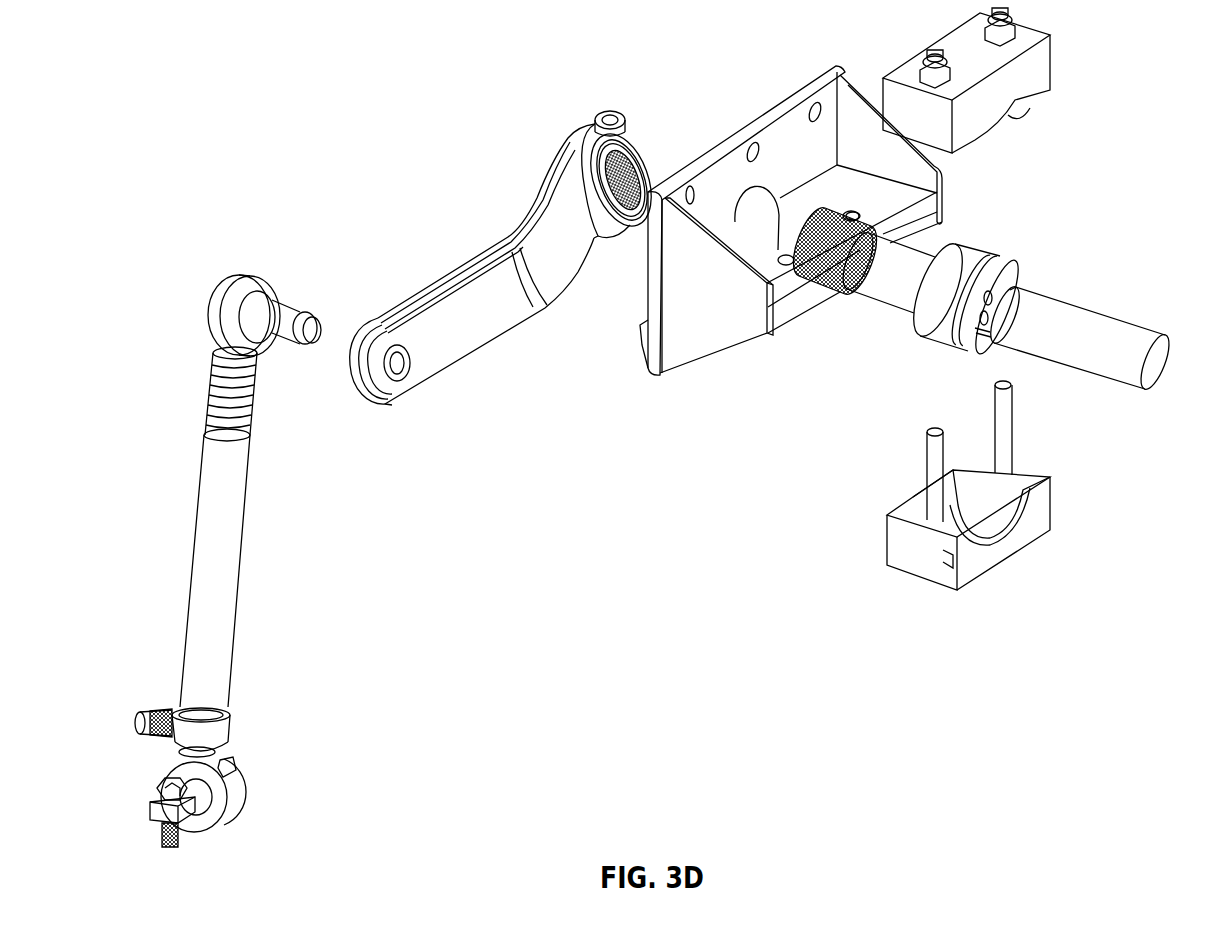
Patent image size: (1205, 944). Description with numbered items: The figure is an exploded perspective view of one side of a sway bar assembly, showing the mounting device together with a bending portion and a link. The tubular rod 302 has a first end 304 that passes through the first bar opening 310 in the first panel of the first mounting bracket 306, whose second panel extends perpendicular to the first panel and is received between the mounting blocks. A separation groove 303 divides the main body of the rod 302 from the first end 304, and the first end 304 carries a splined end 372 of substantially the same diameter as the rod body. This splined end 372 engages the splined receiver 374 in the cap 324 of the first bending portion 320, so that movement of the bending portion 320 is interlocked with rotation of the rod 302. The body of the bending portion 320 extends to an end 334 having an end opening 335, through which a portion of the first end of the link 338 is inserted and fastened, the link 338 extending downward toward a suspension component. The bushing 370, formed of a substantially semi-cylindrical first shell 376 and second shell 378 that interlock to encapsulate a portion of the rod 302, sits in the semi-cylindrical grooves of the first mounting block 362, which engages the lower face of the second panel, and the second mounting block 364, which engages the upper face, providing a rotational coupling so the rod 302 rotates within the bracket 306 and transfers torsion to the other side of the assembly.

The tubular rod 302 is at (1097, 332).
The separation groove 303 is at (868, 300).
The first end 304 is at (795, 332).
The first mounting bracket 306 is at (648, 338).
The first bar opening 310 is at (750, 197).
The first bending portion 320 is at (560, 215).
The cap 324 is at (575, 140).
The end 334 is at (395, 420).
The end opening 335 is at (390, 330).
The link 338 is at (258, 285).
The first mounting block 362 is at (975, 555).
The second mounting block 364 is at (1050, 75).
The bushing 370 is at (1040, 262).
The splined end 372 is at (850, 212).
The splined receiver 374 is at (643, 177).
The first shell 376 is at (948, 340).
The second shell 378 is at (965, 258).